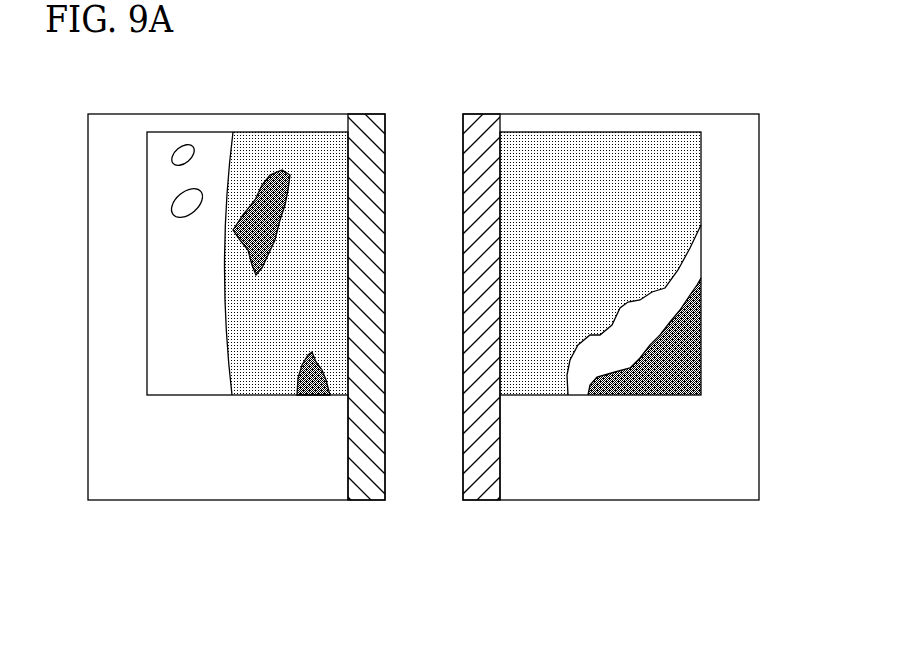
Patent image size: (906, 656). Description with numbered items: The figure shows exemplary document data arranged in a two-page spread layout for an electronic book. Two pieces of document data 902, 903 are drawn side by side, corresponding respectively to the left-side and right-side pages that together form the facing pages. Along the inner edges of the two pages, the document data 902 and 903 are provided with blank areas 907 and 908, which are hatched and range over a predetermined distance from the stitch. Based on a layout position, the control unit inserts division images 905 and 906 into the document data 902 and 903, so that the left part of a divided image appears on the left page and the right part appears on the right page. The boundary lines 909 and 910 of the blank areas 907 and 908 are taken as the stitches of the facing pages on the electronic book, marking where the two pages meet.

The document data 902 is at (88, 452).
The document data 903 is at (752, 463).
The division image 905 is at (166, 140).
The division image 906 is at (677, 143).
The blank area 907 is at (347, 124).
The blank area 908 is at (500, 122).
The boundary line 909 is at (348, 487).
The boundary line 910 is at (500, 480).